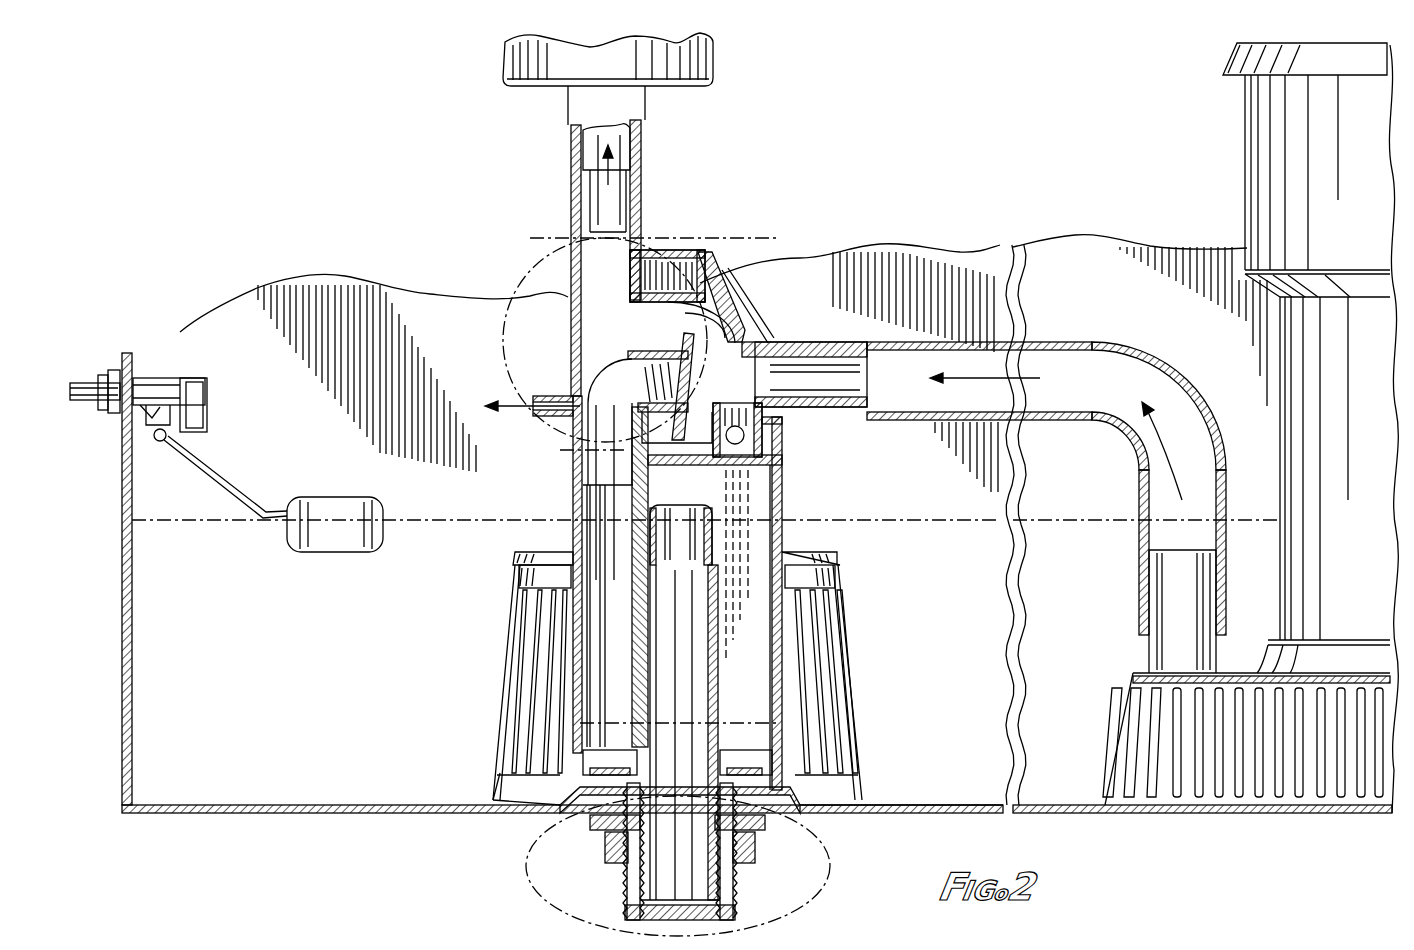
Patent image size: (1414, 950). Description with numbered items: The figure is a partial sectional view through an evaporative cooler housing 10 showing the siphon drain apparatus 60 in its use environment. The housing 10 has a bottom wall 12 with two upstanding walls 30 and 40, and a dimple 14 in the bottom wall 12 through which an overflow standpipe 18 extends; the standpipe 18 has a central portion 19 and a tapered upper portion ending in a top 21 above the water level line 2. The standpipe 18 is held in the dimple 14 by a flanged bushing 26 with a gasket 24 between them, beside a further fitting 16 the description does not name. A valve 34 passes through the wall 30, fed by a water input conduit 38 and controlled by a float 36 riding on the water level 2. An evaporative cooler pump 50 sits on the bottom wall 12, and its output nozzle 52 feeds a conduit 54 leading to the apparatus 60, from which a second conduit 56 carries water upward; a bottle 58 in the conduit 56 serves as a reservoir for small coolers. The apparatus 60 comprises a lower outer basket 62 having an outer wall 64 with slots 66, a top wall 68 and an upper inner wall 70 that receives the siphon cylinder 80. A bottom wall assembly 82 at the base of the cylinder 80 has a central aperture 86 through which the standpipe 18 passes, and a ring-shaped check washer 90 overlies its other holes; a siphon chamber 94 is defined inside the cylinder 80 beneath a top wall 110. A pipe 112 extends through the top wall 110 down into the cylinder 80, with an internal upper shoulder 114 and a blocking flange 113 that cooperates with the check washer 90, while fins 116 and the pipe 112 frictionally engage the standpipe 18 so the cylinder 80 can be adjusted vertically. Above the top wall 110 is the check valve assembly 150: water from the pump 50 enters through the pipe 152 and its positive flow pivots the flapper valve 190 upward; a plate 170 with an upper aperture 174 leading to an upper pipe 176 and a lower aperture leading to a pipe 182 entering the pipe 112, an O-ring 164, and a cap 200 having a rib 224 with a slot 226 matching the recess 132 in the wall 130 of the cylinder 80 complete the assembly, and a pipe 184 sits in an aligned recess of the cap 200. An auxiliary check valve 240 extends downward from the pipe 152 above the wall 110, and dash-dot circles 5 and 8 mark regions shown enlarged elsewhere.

The evaporative cooler housing 10 is at (118, 582).
The bottom wall 12 is at (292, 815).
The dimple 14 is at (756, 842).
The lock nut 16 is at (608, 840).
The overflow standpipe 18 is at (722, 710).
The central portion 19 is at (715, 680).
The top 21 is at (664, 510).
The gasket 24 is at (594, 820).
The flanged bushing 26 is at (736, 872).
The wall 30 is at (122, 636).
The valve 34 is at (200, 380).
The float 36 is at (366, 540).
The water input conduit 38 is at (96, 382).
The wall 40 is at (276, 703).
The evaporative cooler pump 50 is at (1244, 216).
The output nozzle 52 is at (1160, 658).
The conduit 54 is at (1206, 392).
The second conduit 56 is at (566, 132).
The bottle 58 is at (716, 68).
The siphon drain apparatus 60 is at (694, 230).
The lower outer basket 62 is at (838, 560).
The outer wall 64 is at (516, 572).
The slots 66 is at (844, 652).
The top wall 68 is at (522, 552).
The upper inner wall 70 is at (792, 545).
The siphon cylinder 80 is at (786, 514).
The bottom wall assembly 82 is at (796, 798).
The central aperture 86 is at (718, 776).
The check washer 90 is at (610, 762).
The siphon chamber 94 is at (770, 598).
The top wall 110 is at (724, 478).
The pipe 112 is at (634, 512).
The blocking flange 113 is at (612, 740).
The internal upper shoulder 114 is at (578, 476).
The fins 116 is at (730, 589).
The wall 130 is at (766, 438).
The recess 132 is at (636, 440).
The check valve assembly 150 is at (762, 328).
The pipe 152 is at (870, 386).
The O-ring 164 is at (732, 262).
The plate 170 is at (680, 262).
The upper aperture 174 is at (680, 322).
The upper pipe 176 is at (572, 232).
The pipe 182 is at (570, 428).
The pipe 184 is at (556, 392).
The flapper valve 190 is at (690, 370).
The cap 200 is at (570, 302).
The rib 224 is at (650, 252).
The slot 226 is at (745, 286).
The auxiliary check valve 240 is at (762, 458).
The water level line 2 is at (474, 522).
The detail indicator 5 is at (756, 296).
The detail indicator 8 is at (826, 880).